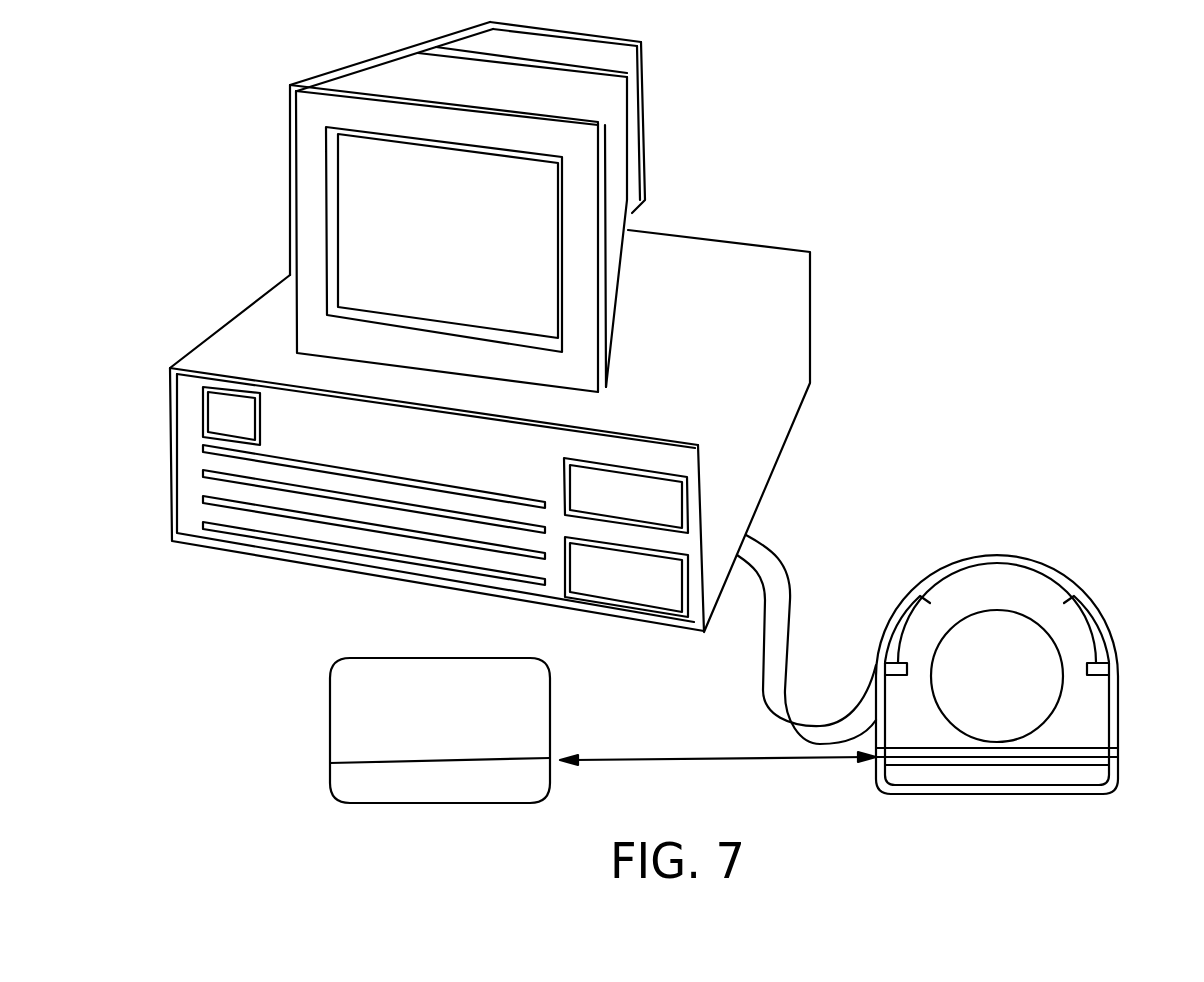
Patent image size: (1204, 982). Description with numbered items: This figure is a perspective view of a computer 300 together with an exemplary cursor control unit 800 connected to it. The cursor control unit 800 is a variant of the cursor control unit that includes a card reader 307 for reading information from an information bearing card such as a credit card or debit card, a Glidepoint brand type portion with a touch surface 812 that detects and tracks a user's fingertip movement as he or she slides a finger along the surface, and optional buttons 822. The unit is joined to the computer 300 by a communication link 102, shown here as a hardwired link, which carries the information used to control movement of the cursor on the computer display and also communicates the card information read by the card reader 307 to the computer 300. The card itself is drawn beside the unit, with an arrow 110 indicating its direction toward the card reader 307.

The computer 300 is at (783, 412).
The communication link 102 is at (762, 693).
The cursor control unit 800 is at (1080, 594).
The optional button 822 is at (903, 617).
The touch surface 812 is at (962, 698).
The card reader 307 is at (1118, 750).
The card insertion direction arrow 110 is at (661, 760).